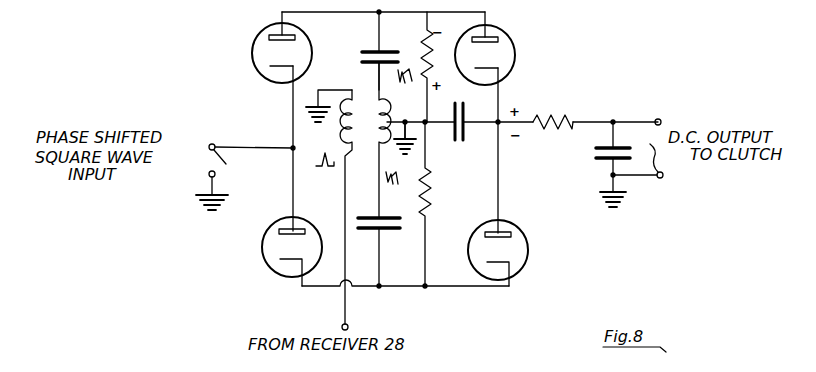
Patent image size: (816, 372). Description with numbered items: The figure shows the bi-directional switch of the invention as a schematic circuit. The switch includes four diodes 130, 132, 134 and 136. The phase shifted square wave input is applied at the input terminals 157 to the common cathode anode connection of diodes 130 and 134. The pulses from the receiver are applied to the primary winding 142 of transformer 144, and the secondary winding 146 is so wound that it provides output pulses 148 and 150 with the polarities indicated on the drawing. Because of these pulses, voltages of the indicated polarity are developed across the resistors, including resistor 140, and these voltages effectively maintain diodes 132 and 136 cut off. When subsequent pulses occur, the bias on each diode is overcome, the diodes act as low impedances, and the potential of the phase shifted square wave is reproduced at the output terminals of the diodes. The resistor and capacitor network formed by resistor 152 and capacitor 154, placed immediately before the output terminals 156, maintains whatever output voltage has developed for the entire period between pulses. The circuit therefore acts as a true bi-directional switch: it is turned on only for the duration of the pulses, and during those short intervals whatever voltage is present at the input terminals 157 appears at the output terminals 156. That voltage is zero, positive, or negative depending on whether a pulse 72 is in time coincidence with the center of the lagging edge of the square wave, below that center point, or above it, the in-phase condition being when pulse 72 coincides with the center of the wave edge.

The diode 130 is at (266, 27).
The diode 132 is at (508, 36).
The diode 134 is at (264, 270).
The diode 136 is at (521, 267).
The resistor 140 is at (441, 204).
The primary winding 142 is at (365, 92).
The transformer 144 is at (372, 192).
The secondary winding 146 is at (393, 118).
The output pulse 148 is at (410, 47).
The output pulse 150 is at (387, 242).
The resistor 152 is at (561, 115).
The capacitor 154 is at (603, 164).
The output terminals 156 is at (657, 126).
The input terminals 157 is at (244, 177).
The pulse 72 is at (309, 160).